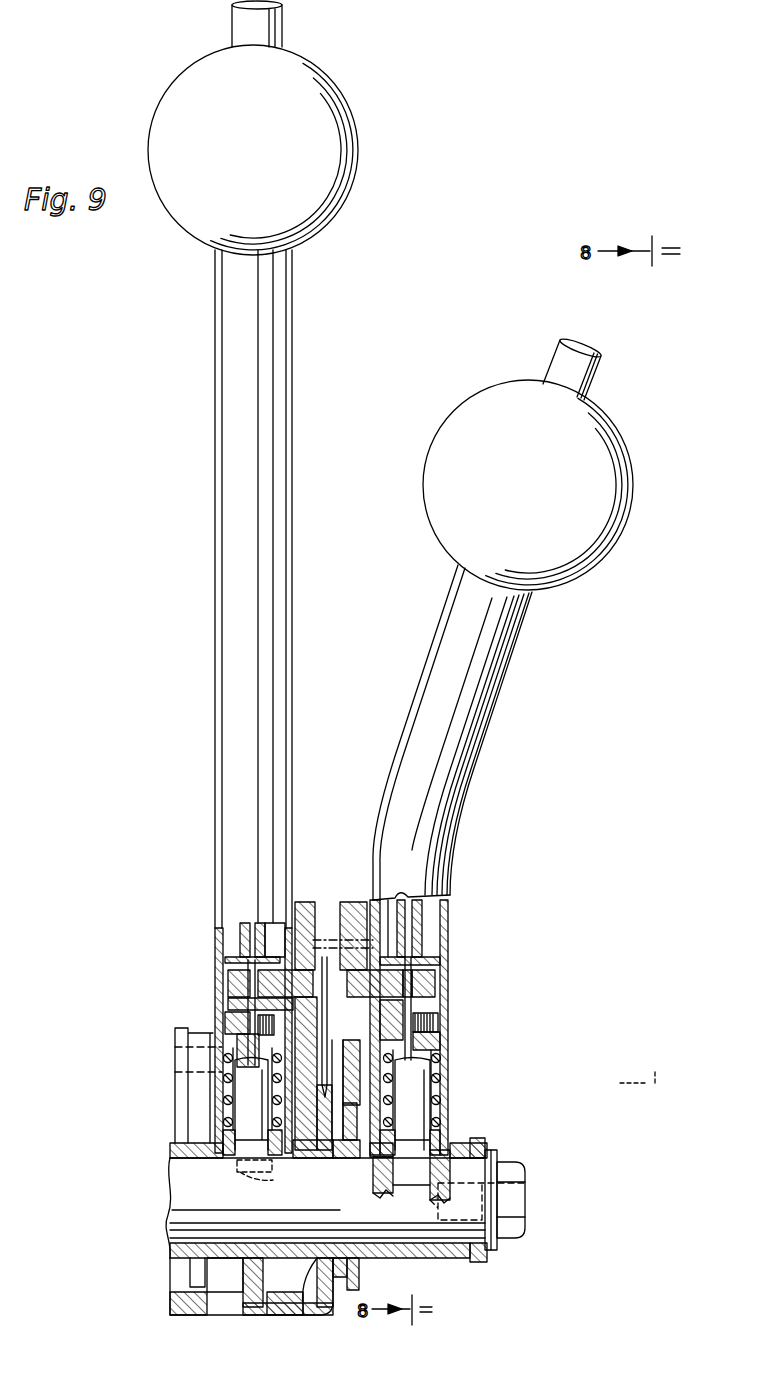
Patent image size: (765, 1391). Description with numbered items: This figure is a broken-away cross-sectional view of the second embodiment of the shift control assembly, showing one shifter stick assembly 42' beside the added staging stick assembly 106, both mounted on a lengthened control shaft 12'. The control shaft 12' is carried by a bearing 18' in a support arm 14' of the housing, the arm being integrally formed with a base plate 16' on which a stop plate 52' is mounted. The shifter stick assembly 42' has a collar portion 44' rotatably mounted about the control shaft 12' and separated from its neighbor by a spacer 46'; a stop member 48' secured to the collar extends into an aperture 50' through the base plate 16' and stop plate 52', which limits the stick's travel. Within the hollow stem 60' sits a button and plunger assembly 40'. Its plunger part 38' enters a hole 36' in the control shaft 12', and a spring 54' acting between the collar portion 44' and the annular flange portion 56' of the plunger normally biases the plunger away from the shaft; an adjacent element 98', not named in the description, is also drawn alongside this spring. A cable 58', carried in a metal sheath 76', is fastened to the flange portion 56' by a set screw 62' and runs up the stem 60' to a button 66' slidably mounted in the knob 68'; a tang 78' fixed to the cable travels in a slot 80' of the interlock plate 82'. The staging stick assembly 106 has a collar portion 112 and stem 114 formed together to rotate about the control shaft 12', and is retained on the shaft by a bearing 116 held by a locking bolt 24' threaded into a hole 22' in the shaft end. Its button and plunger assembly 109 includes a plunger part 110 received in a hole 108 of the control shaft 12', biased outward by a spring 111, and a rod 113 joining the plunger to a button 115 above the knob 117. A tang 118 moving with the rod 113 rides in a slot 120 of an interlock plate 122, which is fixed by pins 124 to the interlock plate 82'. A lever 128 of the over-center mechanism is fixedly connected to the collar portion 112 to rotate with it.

The button 66' is at (295, 24).
The knob 68' is at (285, 150).
The shifter stick assembly 42' is at (176, 589).
The stem 60' is at (311, 589).
The button 115 is at (600, 369).
The knob 117 is at (629, 433).
The staging stick assembly 106 is at (493, 719).
The interlock plate 82' is at (311, 906).
The tang 78' is at (335, 917).
The set screw 62' is at (343, 988).
The interlock plate 122 is at (352, 903).
The pins 124 is at (374, 900).
The metal sheath 76' is at (217, 924).
The cable 58' is at (215, 941).
The annular flange portion 56' is at (205, 1043).
The slot 80' is at (221, 990).
The button and plunger assembly 40' is at (212, 1031).
The tang 118 is at (430, 961).
The rod 113 is at (407, 982).
The stem 114 is at (448, 993).
The button and plunger assembly 109 is at (438, 1022).
The spring 111 is at (453, 1053).
The slot 120 is at (448, 1066).
The spring 98' is at (200, 1089).
The spring 54' is at (200, 1107).
The plunger part 110 is at (418, 1127).
The hole 108 is at (410, 1180).
The control shaft 12' is at (354, 1189).
The threaded hole 22' is at (530, 1200).
The locking bolt 24' is at (512, 1200).
The collar portion 112 is at (448, 1257).
The bearing 116 is at (488, 1262).
The plunger part 38' is at (230, 1175).
The hole 36' is at (283, 1183).
The support arm 14' is at (327, 1095).
The spacer 46' is at (225, 1286).
The stop plate 52' is at (188, 1316).
The base plate 16' is at (224, 1299).
The stop member 48' is at (253, 1299).
The aperture 50' is at (292, 1299).
The collar portion 44' is at (288, 1299).
The bearing 18' is at (348, 1299).
The lever 128 is at (358, 1277).